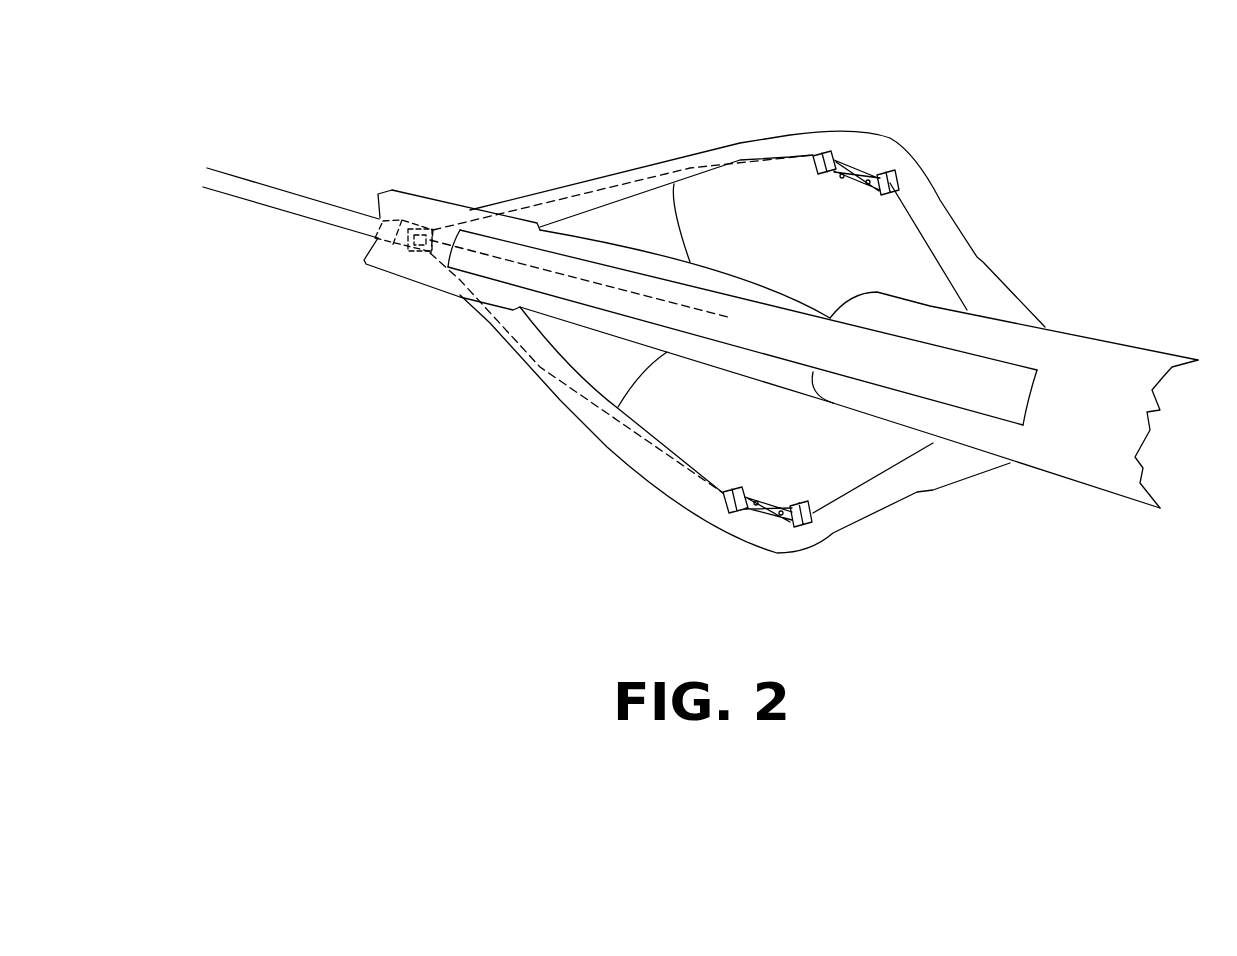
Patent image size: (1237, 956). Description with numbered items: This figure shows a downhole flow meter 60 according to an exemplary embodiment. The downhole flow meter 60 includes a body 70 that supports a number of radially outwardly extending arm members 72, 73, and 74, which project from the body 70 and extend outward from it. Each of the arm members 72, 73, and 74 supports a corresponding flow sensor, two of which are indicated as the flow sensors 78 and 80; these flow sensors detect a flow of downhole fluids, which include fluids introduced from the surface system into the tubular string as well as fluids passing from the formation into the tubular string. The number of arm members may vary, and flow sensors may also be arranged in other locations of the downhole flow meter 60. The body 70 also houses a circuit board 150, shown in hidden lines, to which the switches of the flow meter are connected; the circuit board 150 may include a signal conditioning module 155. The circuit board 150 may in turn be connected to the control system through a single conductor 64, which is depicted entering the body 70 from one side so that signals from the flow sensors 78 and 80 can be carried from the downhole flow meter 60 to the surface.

The downhole flow meter 60 is at (557, 113).
The single conductor 64 is at (233, 176).
The body 70 is at (442, 207).
The arm member 72 is at (775, 137).
The arm member 73 is at (782, 557).
The arm member 74 is at (940, 377).
The flow sensor 78 is at (850, 193).
The flow sensor 80 is at (770, 478).
The circuit board 150 is at (397, 253).
The signal conditioning module 155 is at (423, 255).